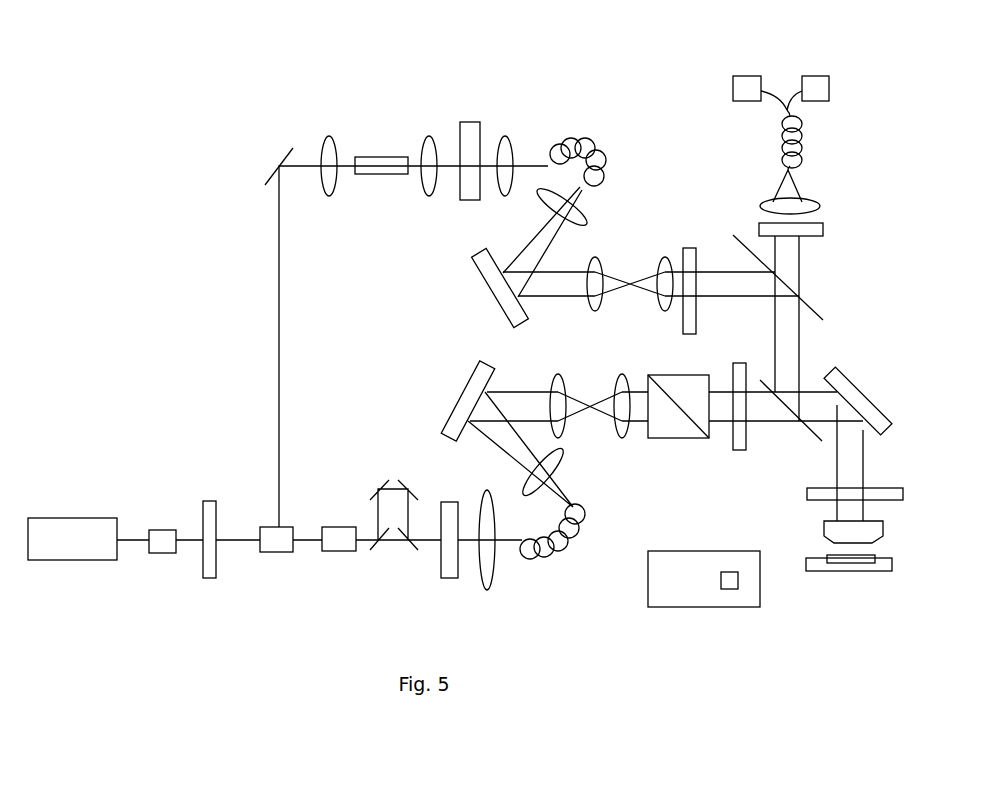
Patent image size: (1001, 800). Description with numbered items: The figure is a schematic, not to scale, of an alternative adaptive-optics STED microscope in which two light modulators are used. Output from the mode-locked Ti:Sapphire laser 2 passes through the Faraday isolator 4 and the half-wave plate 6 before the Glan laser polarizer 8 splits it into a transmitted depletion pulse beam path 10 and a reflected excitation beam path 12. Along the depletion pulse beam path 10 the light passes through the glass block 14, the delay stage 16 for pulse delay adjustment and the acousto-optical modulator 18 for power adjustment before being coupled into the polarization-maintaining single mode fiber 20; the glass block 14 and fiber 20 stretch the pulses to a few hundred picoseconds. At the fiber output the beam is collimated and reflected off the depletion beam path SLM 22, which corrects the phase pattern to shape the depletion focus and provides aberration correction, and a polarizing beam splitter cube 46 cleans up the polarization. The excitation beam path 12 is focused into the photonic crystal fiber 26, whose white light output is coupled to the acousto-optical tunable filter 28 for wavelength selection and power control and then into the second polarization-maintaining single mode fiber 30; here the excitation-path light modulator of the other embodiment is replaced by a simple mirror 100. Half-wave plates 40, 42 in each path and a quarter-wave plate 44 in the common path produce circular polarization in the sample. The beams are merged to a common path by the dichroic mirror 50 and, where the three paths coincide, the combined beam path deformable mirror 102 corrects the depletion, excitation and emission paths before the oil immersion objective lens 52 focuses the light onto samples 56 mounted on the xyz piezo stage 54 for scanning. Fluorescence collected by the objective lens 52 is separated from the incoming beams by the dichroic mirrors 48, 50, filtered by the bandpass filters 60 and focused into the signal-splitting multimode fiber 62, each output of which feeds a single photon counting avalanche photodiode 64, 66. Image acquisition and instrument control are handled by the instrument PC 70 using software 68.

The mode-locked Ti:Sapphire laser 2 is at (66, 562).
The Faraday isolator 4 is at (157, 555).
The half-wave plate 6 is at (203, 580).
The Glan laser polarizer 8 is at (285, 553).
The depletion pulse beam path 10 is at (520, 586).
The excitation beam path 12 is at (262, 285).
The glass block 14 is at (336, 553).
The delay stage 16 is at (388, 476).
The acousto-optical modulator 18 is at (441, 578).
The polarization-maintaining single mode fiber 20 is at (592, 530).
The depletion beam path spatial light modulator 22 is at (458, 395).
The photonic crystal fiber 26 is at (386, 157).
The acousto-optical tunable filter 28 is at (468, 122).
The second polarization-maintaining single mode fiber 30 is at (583, 140).
The half-wave plate 40 is at (733, 450).
The half-wave plate 42 is at (683, 248).
The quarter-wave plate 44 is at (825, 501).
The polarizing beam splitter cube 46 is at (652, 445).
The dichroic mirror 48 is at (767, 264).
The dichroic mirror 50 is at (797, 415).
The oil immersion objective lens 52 is at (838, 531).
The xyz piezo stage 54 is at (882, 573).
The sample 56 is at (852, 556).
The bandpass filter 60 is at (823, 236).
The signal-splitting multimode fiber 62 is at (800, 158).
The single photon counting avalanche photodiode 64 is at (748, 74).
The single photon counting avalanche photodiode 66 is at (822, 72).
The software 68 is at (722, 590).
The instrument PC 70 is at (697, 609).
The mirror 100 is at (470, 296).
The combined beam path deformable mirror 102 is at (862, 377).